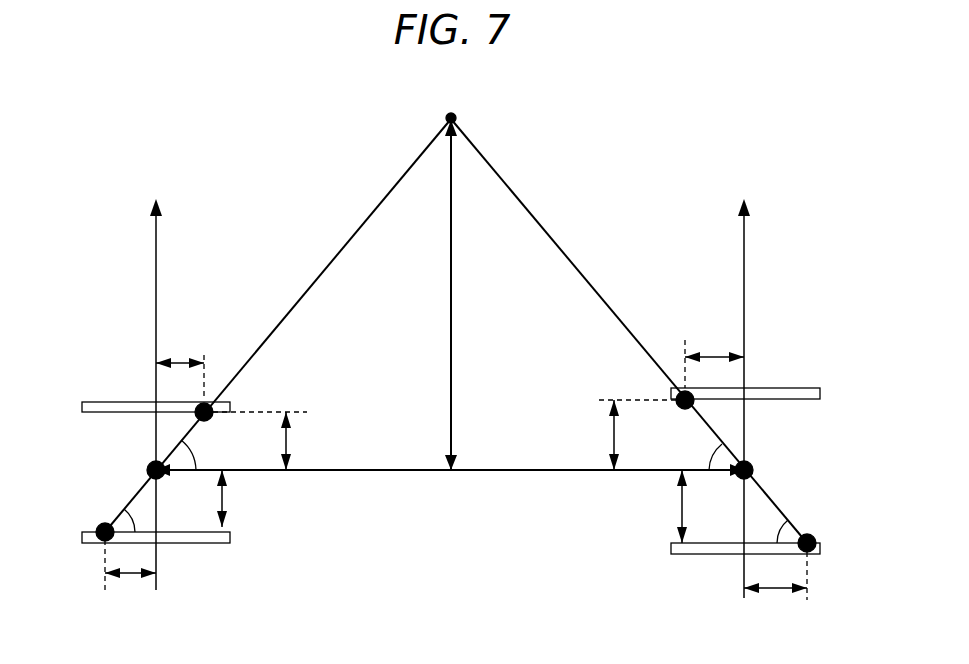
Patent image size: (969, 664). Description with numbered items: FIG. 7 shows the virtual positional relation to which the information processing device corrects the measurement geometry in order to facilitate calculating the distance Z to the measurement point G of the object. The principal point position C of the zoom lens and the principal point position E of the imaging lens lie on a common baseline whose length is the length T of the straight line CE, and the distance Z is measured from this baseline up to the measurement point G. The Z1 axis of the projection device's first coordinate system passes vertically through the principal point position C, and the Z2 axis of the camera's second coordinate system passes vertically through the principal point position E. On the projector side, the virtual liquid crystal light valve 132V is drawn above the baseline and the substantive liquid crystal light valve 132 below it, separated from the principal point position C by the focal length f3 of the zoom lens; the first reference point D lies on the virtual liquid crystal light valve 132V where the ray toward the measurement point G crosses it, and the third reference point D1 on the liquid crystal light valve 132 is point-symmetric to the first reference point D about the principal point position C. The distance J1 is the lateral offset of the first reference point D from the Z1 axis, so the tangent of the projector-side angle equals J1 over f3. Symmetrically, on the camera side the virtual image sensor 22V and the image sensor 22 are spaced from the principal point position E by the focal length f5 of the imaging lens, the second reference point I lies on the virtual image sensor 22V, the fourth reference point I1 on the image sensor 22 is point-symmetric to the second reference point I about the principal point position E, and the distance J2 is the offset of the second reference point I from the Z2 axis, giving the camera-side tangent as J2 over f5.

The measurement point G is at (457, 116).
The distance to the measurement point Z is at (452, 318).
The Z1 axis Z1 is at (157, 381).
The Z2 axis Z2 is at (745, 385).
The length of the straight line CE T is at (510, 471).
The principal point position of the zoom lens C is at (150, 466).
The first reference point D is at (212, 418).
The third reference point D1 is at (100, 525).
The principal point position of the imaging lens E is at (754, 466).
The second reference point I is at (678, 406).
The fourth reference point I1 is at (812, 535).
The focal length of the zoom lens f3 is at (287, 444).
The focal length of the imaging lens f5 is at (614, 437).
The distance specified by the first reference point J1 is at (183, 362).
The distance specified by the second reference point J2 is at (713, 356).
The liquid crystal light valve 132 is at (82, 532).
The virtual liquid crystal light valve 132V is at (82, 400).
The image sensor 22 is at (820, 543).
The virtual image sensor 22V is at (820, 390).